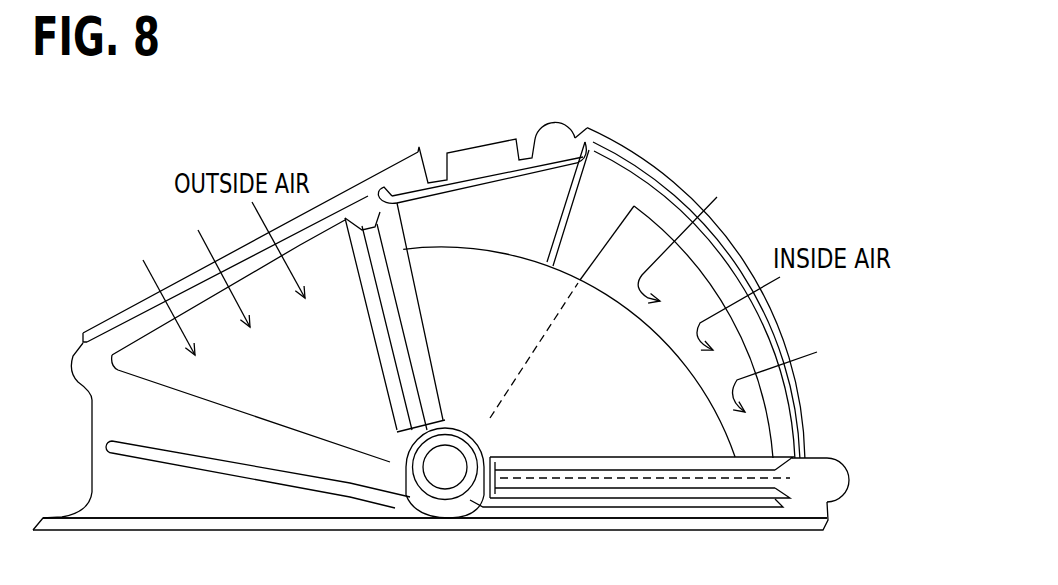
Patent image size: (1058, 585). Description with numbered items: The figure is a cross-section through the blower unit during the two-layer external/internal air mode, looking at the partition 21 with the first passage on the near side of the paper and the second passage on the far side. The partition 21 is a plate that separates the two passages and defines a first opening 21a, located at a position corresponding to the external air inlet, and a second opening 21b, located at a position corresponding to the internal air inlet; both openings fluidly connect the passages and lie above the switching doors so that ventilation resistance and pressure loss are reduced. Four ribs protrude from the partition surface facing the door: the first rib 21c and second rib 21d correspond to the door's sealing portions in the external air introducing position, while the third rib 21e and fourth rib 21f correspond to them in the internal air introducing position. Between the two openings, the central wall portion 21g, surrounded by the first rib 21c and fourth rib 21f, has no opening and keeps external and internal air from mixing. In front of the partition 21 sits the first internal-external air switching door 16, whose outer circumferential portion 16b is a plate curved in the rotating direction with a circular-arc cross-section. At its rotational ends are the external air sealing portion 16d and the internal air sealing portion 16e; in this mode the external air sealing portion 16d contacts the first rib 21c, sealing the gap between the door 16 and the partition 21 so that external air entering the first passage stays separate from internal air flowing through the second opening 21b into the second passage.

The first internal-external air switching door 16 is at (605, 290).
The outer circumferential portion 16b is at (700, 377).
The external air sealing portion 16d is at (360, 216).
The internal air sealing portion 16e is at (770, 484).
The partition 21 is at (395, 165).
The first opening 21a is at (193, 278).
The second opening 21b is at (697, 260).
The first rib 21c is at (400, 287).
The second rib 21d is at (733, 452).
The third rib 21e is at (150, 447).
The fourth rib 21f is at (613, 147).
The central wall portion 21g is at (507, 210).